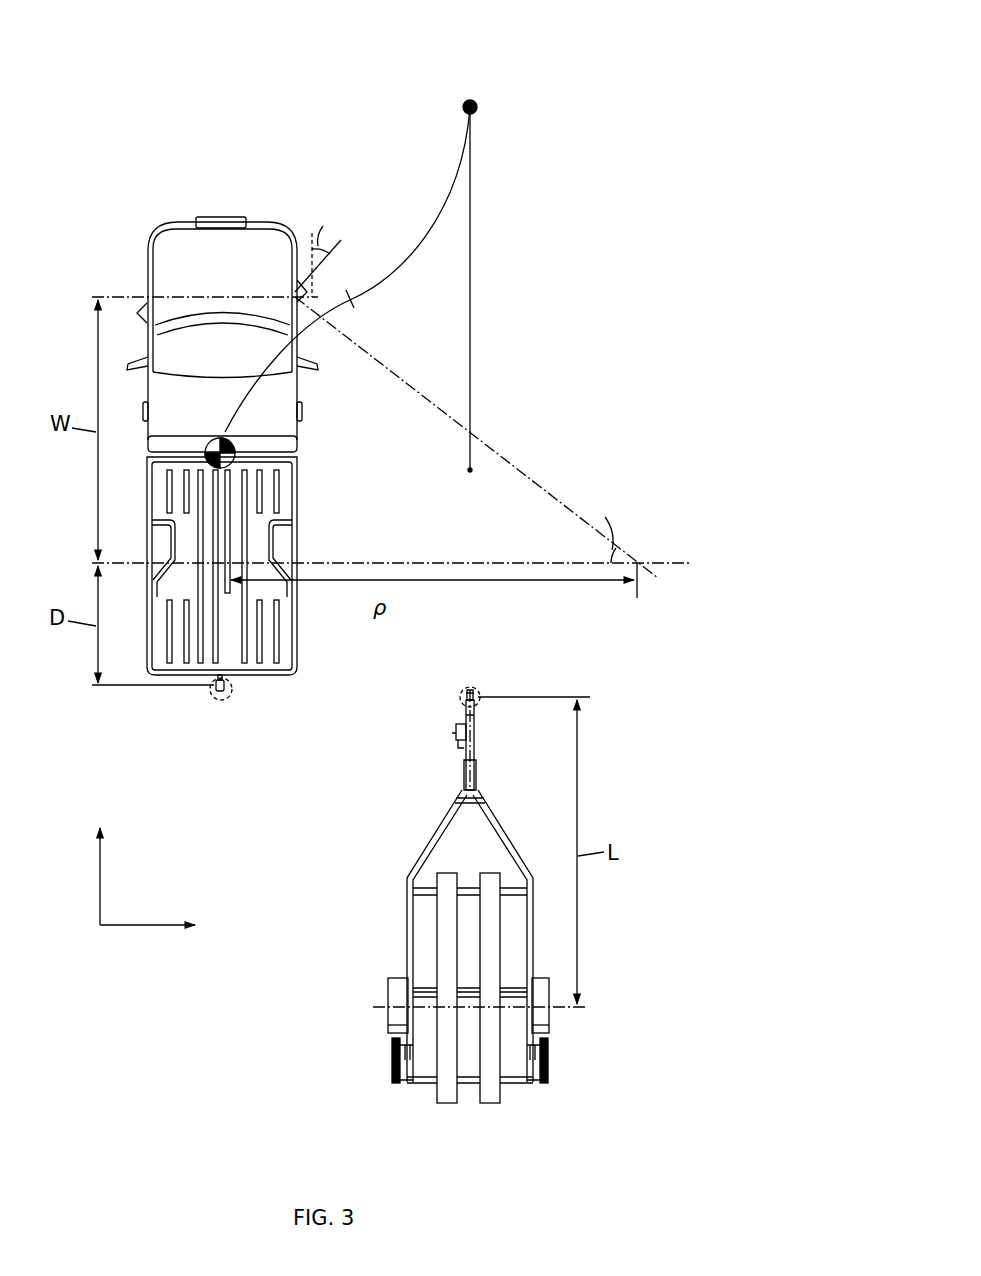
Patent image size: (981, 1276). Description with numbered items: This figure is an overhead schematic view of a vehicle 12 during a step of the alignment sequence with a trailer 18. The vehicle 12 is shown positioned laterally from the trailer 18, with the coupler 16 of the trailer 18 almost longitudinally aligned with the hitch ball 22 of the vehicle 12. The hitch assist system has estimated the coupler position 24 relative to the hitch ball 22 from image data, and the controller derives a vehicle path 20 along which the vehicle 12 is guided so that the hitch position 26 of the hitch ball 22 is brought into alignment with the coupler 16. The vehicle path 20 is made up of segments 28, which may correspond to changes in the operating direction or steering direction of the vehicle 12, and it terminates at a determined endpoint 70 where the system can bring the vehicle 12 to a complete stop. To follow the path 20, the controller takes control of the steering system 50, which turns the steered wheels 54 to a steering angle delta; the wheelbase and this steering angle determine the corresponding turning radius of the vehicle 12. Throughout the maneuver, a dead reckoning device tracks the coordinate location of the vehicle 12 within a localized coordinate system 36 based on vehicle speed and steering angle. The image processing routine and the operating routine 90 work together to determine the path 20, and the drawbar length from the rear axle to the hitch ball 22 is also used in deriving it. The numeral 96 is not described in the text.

The vehicle 12 is at (122, 219).
The coupler 16 is at (478, 700).
The trailer 18 is at (405, 925).
The vehicle path 20 is at (549, 60).
The hitch ball 22 is at (214, 690).
The coupler position 24 is at (481, 691).
The hitch position 26 is at (229, 698).
The segments 28 is at (420, 266).
The localized coordinate system 36 is at (149, 944).
The steering system 50 is at (313, 328).
The steered wheels 54 is at (141, 316).
The endpoint 70 is at (469, 471).
The operating routine 90 is at (465, 101).
The vehicle center of rotation 96 is at (212, 466).